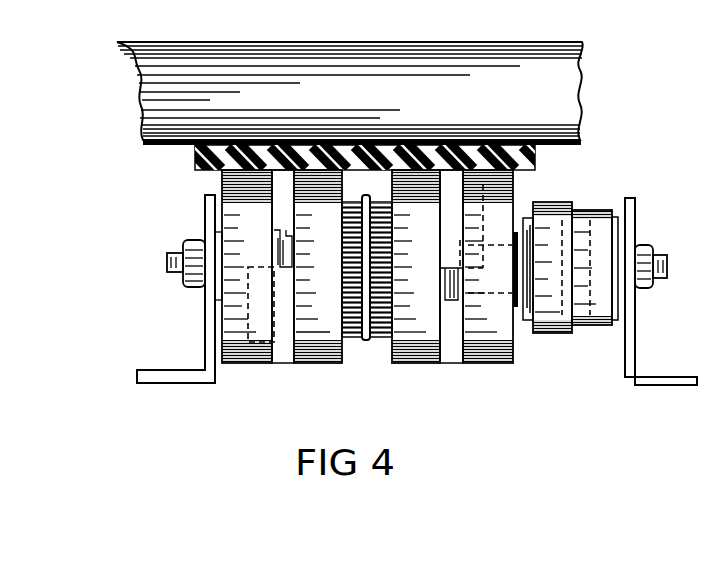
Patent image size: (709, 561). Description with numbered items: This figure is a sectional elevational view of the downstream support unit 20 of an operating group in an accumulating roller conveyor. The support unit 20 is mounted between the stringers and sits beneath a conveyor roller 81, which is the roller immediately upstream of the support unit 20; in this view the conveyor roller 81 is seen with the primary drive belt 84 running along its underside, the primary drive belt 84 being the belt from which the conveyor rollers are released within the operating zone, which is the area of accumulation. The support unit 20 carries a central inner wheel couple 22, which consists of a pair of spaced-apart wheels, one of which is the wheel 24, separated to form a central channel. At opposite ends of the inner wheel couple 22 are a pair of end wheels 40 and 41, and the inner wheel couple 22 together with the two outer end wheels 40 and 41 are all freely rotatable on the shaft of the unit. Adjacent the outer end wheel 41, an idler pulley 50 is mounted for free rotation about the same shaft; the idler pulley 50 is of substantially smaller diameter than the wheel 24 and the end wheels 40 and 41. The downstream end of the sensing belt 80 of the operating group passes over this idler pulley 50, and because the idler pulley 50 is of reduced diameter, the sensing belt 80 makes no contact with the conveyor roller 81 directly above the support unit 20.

The conveyor roller 81 is at (417, 62).
The primary drive belt 84 is at (195, 170).
The downstream support unit 20 is at (200, 322).
The end wheel 40 is at (246, 364).
The inner wheel couple 22 is at (367, 345).
The wheel 24 is at (416, 358).
The end wheel 41 is at (492, 357).
The sensing belt 80 is at (555, 333).
The idler pulley 50 is at (590, 210).